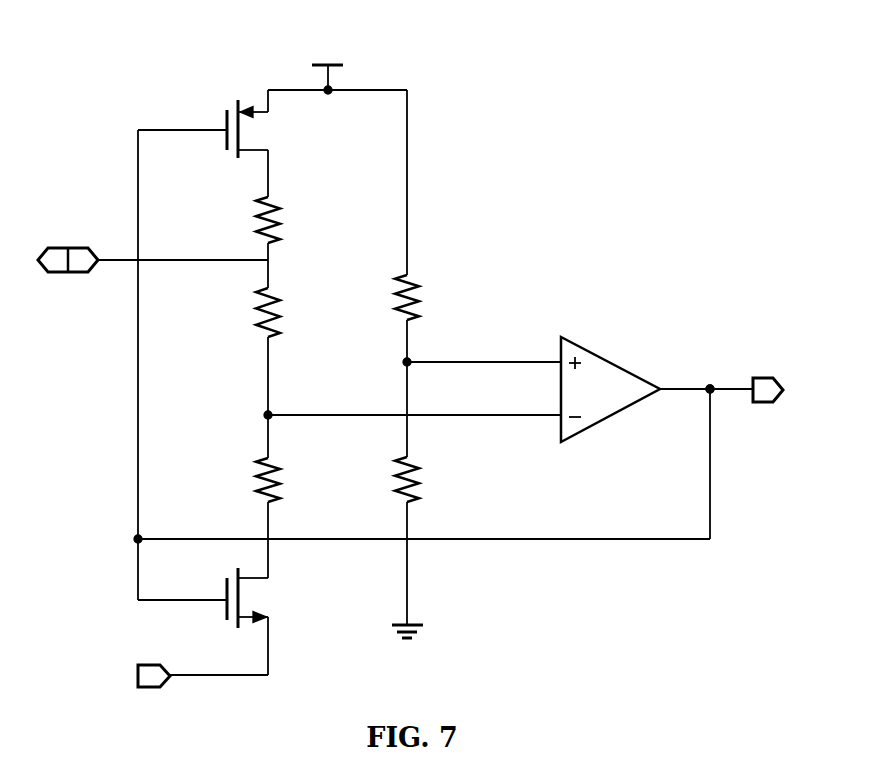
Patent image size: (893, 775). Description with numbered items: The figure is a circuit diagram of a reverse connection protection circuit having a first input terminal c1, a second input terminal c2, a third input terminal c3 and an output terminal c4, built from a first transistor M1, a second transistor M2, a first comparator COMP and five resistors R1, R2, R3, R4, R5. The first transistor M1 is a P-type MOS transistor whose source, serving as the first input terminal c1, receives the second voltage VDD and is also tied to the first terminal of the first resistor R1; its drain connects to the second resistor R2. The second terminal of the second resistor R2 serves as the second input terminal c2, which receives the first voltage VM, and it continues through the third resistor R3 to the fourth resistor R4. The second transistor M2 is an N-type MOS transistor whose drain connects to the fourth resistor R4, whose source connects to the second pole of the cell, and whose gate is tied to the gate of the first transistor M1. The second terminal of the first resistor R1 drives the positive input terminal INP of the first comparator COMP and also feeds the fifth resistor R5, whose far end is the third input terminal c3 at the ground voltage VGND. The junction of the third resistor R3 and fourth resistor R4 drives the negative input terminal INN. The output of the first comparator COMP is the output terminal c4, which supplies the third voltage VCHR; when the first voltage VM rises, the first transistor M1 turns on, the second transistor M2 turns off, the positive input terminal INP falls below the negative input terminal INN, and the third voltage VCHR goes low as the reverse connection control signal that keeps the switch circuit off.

The first input terminal c1 is at (307, 81).
The second input terminal c2 is at (76, 267).
The third input terminal c3 is at (304, 638).
The output terminal c4 is at (737, 397).
The first transistor M1 is at (264, 129).
The second transistor M2 is at (265, 598).
The first resistor R1 is at (428, 297).
The second resistor R2 is at (285, 220).
The third resistor R3 is at (285, 312).
The fourth resistor R4 is at (286, 480).
The fifth resistor R5 is at (427, 479).
The first comparator COMP is at (610, 389).
The second voltage VDD is at (328, 66).
The first voltage VM is at (68, 276).
The ground voltage VGND is at (304, 638).
The positive input terminal INP is at (484, 349).
The negative input terminal INN is at (414, 404).
The third voltage VCHR is at (737, 382).